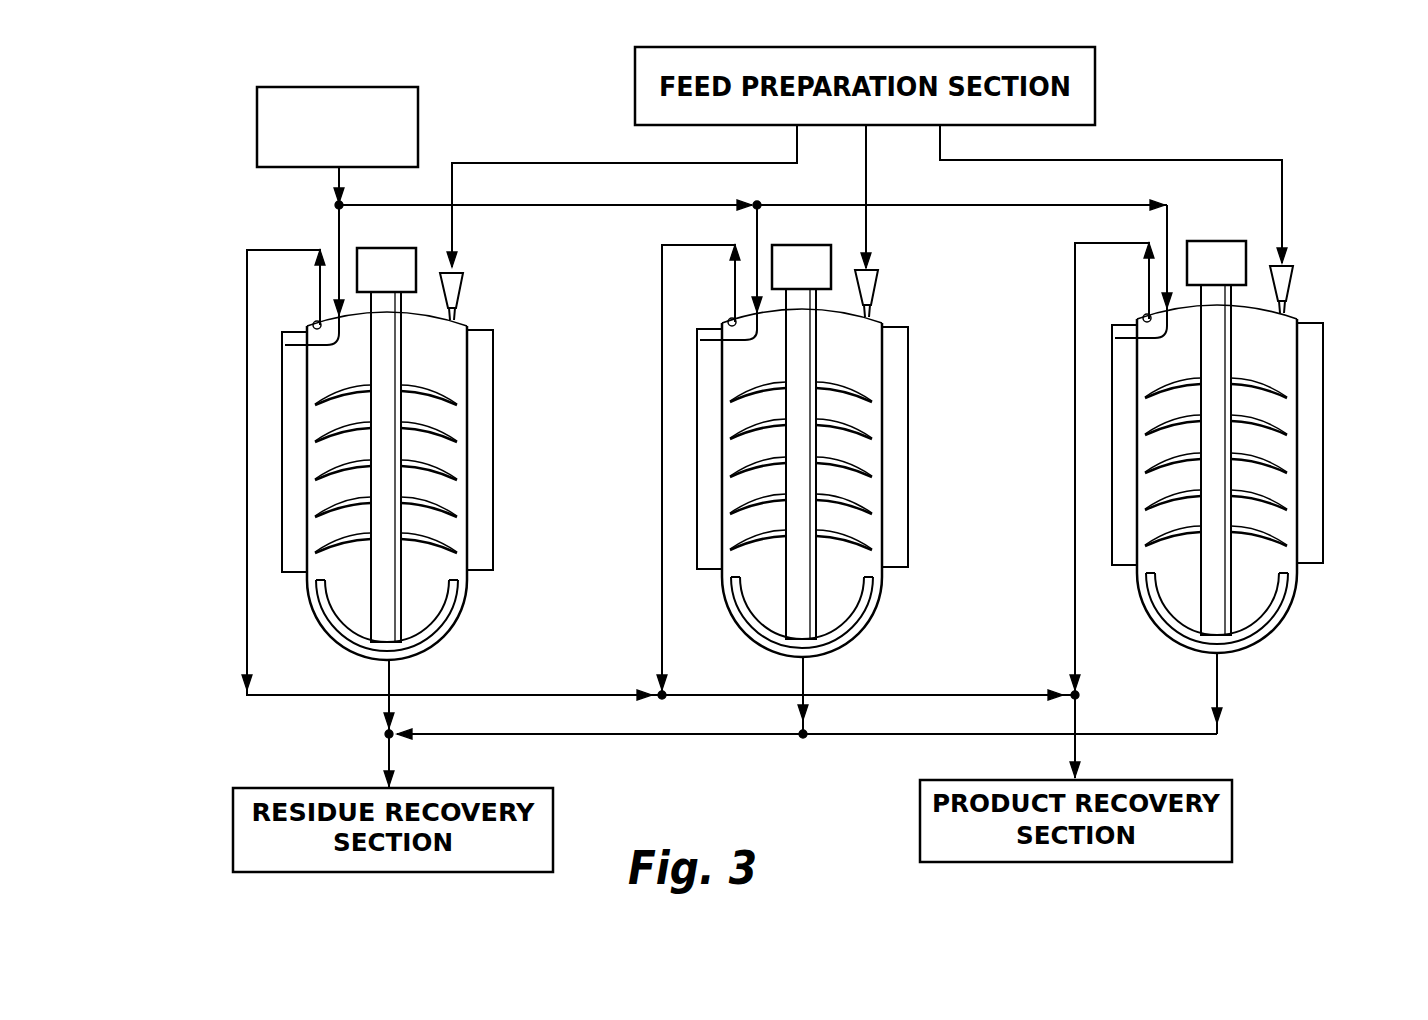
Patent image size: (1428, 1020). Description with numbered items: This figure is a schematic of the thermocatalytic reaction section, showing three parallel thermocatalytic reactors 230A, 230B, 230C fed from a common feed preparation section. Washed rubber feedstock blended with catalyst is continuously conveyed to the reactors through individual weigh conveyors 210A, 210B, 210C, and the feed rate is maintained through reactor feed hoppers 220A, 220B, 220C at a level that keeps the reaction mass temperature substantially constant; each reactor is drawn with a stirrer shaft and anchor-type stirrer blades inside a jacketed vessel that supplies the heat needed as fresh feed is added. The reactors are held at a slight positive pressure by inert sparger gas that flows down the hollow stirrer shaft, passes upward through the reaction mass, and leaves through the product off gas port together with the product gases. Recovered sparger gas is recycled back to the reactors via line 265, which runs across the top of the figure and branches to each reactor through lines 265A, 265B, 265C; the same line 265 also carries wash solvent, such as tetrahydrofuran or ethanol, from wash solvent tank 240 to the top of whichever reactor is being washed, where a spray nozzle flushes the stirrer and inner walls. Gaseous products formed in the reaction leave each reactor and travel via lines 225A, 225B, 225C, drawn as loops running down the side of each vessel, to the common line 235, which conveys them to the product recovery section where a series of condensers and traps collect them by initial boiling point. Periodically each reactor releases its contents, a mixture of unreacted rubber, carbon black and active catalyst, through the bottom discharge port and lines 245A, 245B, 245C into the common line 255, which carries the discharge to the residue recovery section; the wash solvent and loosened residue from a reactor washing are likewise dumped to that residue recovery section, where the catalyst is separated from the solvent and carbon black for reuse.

The weigh conveyor 210A is at (622, 163).
The weigh conveyor 210B is at (868, 167).
The weigh conveyor 210C is at (1126, 160).
The reactor feed hopper 220A is at (459, 290).
The reactor feed hopper 220B is at (925, 288).
The reactor feed hopper 220C is at (1341, 286).
The product gas line 225A is at (247, 521).
The product gas line 225B is at (662, 519).
The product gas line 225C is at (1075, 513).
The thermocatalytic reactor 230A is at (477, 581).
The thermocatalytic reactor 230B is at (832, 486).
The thermocatalytic reactor 230C is at (1248, 483).
The product gas line to product recovery section 235 is at (1077, 757).
The wash solvent tank 240 is at (257, 138).
The reactor discharge line 245A is at (387, 707).
The reactor discharge line 245B is at (807, 698).
The reactor discharge line 245C is at (1212, 690).
The residue discharge line 255 is at (731, 735).
The recycle and wash solvent line 265 is at (652, 204).
The branch of line 265 to first reactor 265A is at (339, 224).
The branch of line 265 to second reactor 265B is at (755, 215).
The branch of line 265 to third reactor 265C is at (1203, 214).